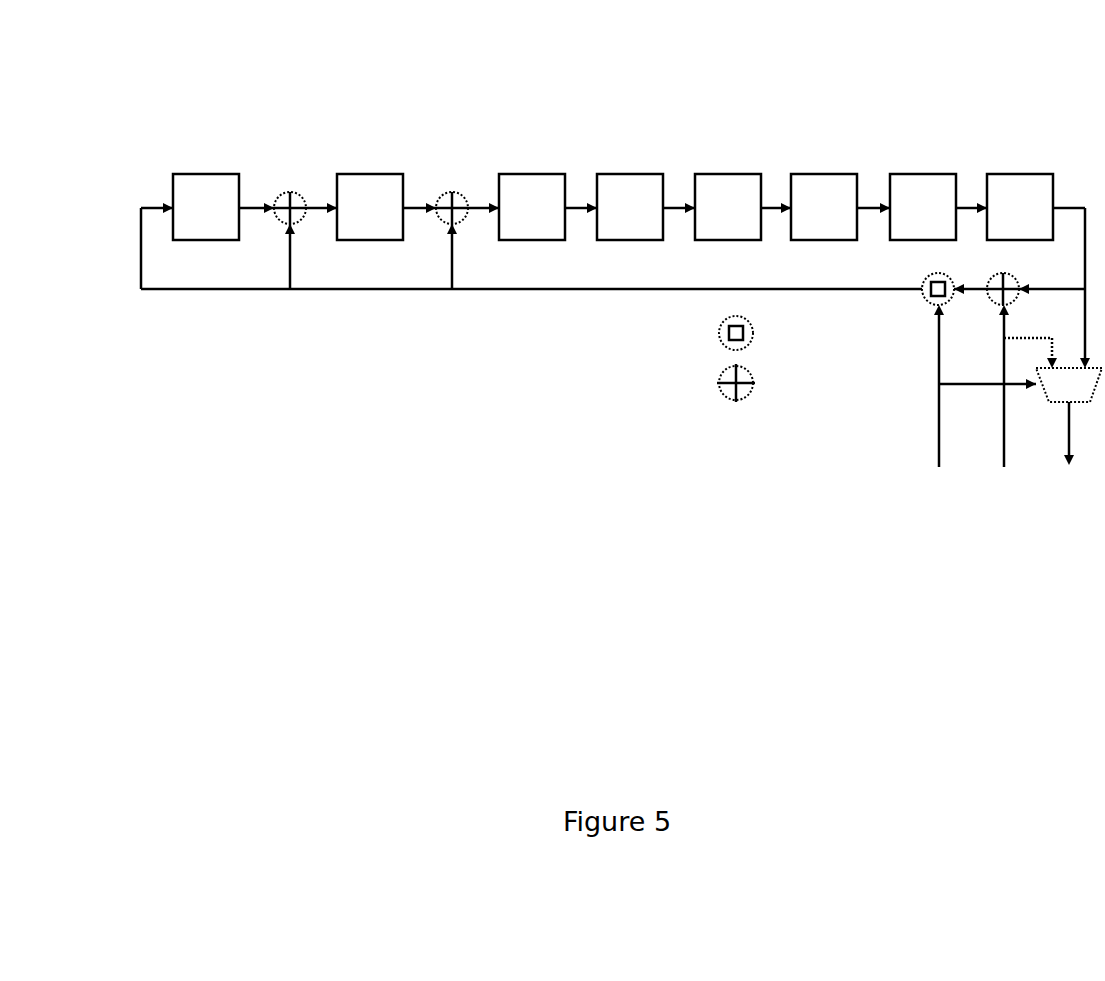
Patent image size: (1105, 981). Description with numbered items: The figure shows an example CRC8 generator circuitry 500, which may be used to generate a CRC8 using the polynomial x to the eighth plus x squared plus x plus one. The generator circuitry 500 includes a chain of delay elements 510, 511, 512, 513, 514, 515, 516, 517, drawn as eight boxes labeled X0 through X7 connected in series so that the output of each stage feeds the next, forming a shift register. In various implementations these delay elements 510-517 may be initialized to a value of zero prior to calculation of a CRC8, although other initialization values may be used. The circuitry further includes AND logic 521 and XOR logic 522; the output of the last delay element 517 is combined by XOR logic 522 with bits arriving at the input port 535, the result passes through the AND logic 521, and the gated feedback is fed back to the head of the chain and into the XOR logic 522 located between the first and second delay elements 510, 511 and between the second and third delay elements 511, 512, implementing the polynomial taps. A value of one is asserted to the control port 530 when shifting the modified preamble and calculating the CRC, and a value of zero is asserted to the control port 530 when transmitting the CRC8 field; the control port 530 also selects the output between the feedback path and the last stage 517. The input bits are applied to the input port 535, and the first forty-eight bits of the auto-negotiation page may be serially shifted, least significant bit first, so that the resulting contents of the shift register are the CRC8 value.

The CRC8 generator circuitry 500 is at (148, 76).
The delay element 510 is at (210, 173).
The delay element 511 is at (378, 173).
The delay element 512 is at (538, 173).
The delay element 513 is at (638, 173).
The delay element 514 is at (737, 173).
The delay element 515 is at (826, 173).
The delay element 516 is at (925, 173).
The delay element 517 is at (1025, 173).
The AND logic 521 is at (931, 273).
The XOR logic 522 is at (300, 194).
The control port 530 is at (935, 466).
The input port 535 is at (1000, 466).